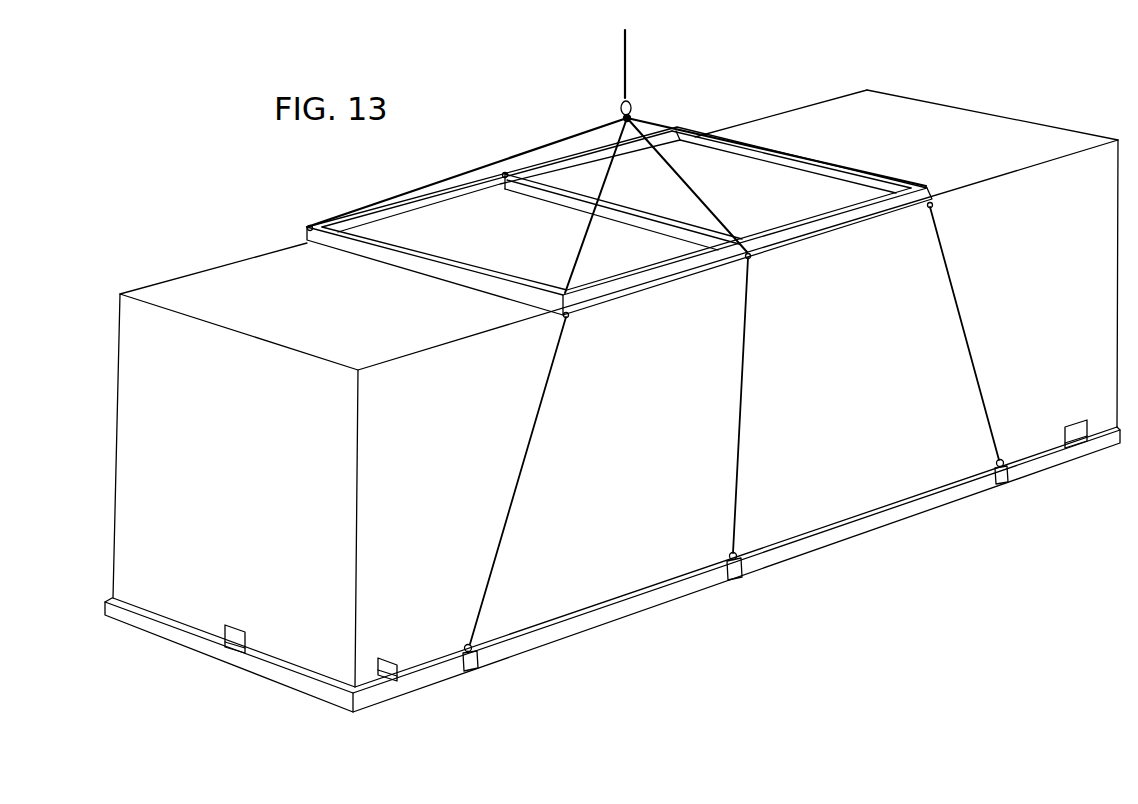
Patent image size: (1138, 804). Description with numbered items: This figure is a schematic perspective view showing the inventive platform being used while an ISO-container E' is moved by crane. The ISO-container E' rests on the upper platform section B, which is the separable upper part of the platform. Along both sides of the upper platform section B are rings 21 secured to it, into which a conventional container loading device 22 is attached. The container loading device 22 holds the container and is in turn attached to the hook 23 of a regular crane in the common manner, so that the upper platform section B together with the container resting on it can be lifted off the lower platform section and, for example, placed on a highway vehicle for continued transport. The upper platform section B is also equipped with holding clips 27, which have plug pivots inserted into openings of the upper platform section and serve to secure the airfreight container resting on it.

The rings 21 is at (473, 652).
The container loading device 22 is at (712, 208).
The hook 23 is at (632, 98).
The holding clips 27 is at (235, 640).
The upper platform section B is at (660, 597).
The ISO-container E' is at (615, 372).